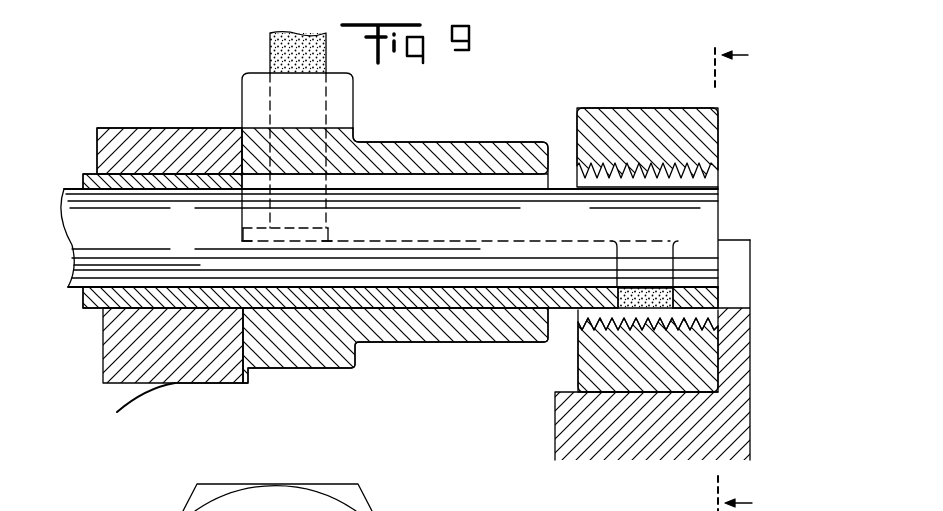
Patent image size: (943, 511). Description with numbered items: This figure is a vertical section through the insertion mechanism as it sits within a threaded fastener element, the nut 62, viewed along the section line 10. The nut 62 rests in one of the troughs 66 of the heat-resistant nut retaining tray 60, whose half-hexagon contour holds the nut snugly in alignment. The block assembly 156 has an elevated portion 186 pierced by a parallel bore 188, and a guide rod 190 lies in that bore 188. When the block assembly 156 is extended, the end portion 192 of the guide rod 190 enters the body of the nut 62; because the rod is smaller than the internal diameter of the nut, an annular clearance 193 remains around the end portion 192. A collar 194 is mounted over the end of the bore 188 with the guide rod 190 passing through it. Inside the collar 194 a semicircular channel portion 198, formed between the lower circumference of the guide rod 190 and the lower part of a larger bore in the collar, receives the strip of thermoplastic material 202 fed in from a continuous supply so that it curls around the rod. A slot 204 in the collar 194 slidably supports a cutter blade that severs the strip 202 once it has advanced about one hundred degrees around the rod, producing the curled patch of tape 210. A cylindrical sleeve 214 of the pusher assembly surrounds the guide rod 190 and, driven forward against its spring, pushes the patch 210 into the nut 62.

The section line 10- 10 is at (752, 275).
The nut retaining tray 60 is at (733, 405).
The nut 62 is at (695, 128).
The trough 66 is at (604, 393).
The block assembly 156 is at (130, 387).
The elevated portion 186 is at (163, 103).
The bore 188 is at (158, 311).
The guide rod 190 is at (88, 243).
The end portion 192 is at (705, 222).
The annular clearance 193 is at (683, 310).
The collar 194 is at (447, 155).
The semicircular channel portion 198 is at (437, 310).
The strip of thermoplastic material 202 is at (268, 46).
The slot 204 is at (337, 232).
The patch of tape 210 is at (651, 312).
The cylindrical sleeve 214 is at (100, 183).